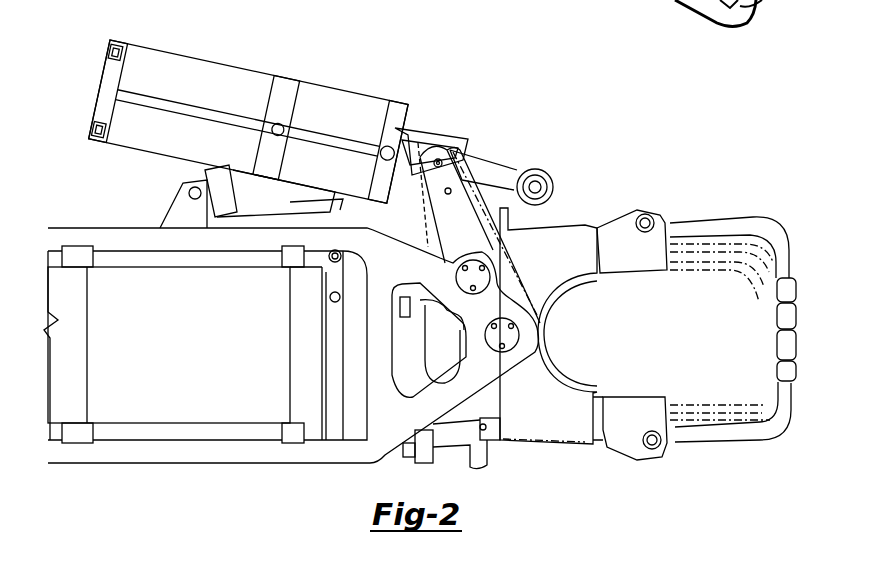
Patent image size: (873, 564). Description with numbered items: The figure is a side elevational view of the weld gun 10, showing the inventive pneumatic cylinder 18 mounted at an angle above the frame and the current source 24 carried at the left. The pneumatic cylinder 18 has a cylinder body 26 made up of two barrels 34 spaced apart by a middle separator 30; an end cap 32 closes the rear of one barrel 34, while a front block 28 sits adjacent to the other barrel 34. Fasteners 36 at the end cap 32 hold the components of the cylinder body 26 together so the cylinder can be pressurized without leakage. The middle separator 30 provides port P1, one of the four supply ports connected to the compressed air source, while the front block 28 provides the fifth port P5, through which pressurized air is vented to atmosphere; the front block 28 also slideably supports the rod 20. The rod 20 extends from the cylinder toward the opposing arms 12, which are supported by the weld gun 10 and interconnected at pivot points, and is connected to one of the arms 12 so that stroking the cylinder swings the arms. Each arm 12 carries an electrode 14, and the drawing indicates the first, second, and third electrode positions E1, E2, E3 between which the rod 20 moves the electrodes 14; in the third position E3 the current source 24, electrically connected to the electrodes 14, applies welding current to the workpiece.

The weld gun 10 is at (553, 104).
The opposing arms 12 is at (624, 257).
The electrode 14 is at (758, 217).
The pneumatic cylinder 18 is at (248, 121).
The rod 20 is at (497, 170).
The current source 24 is at (199, 356).
The cylinder body 26 is at (158, 38).
The front block 28 is at (388, 151).
The middle separator 30 is at (283, 95).
The end cap 32 is at (108, 91).
The barrels 34 is at (276, 128).
The fasteners 36 is at (106, 90).
The port P1 is at (278, 129).
The fifth port P5 is at (412, 130).
The first electrode position E1 is at (779, 289).
The second electrode position E2 is at (779, 313).
The third electrode position E3 is at (773, 329).